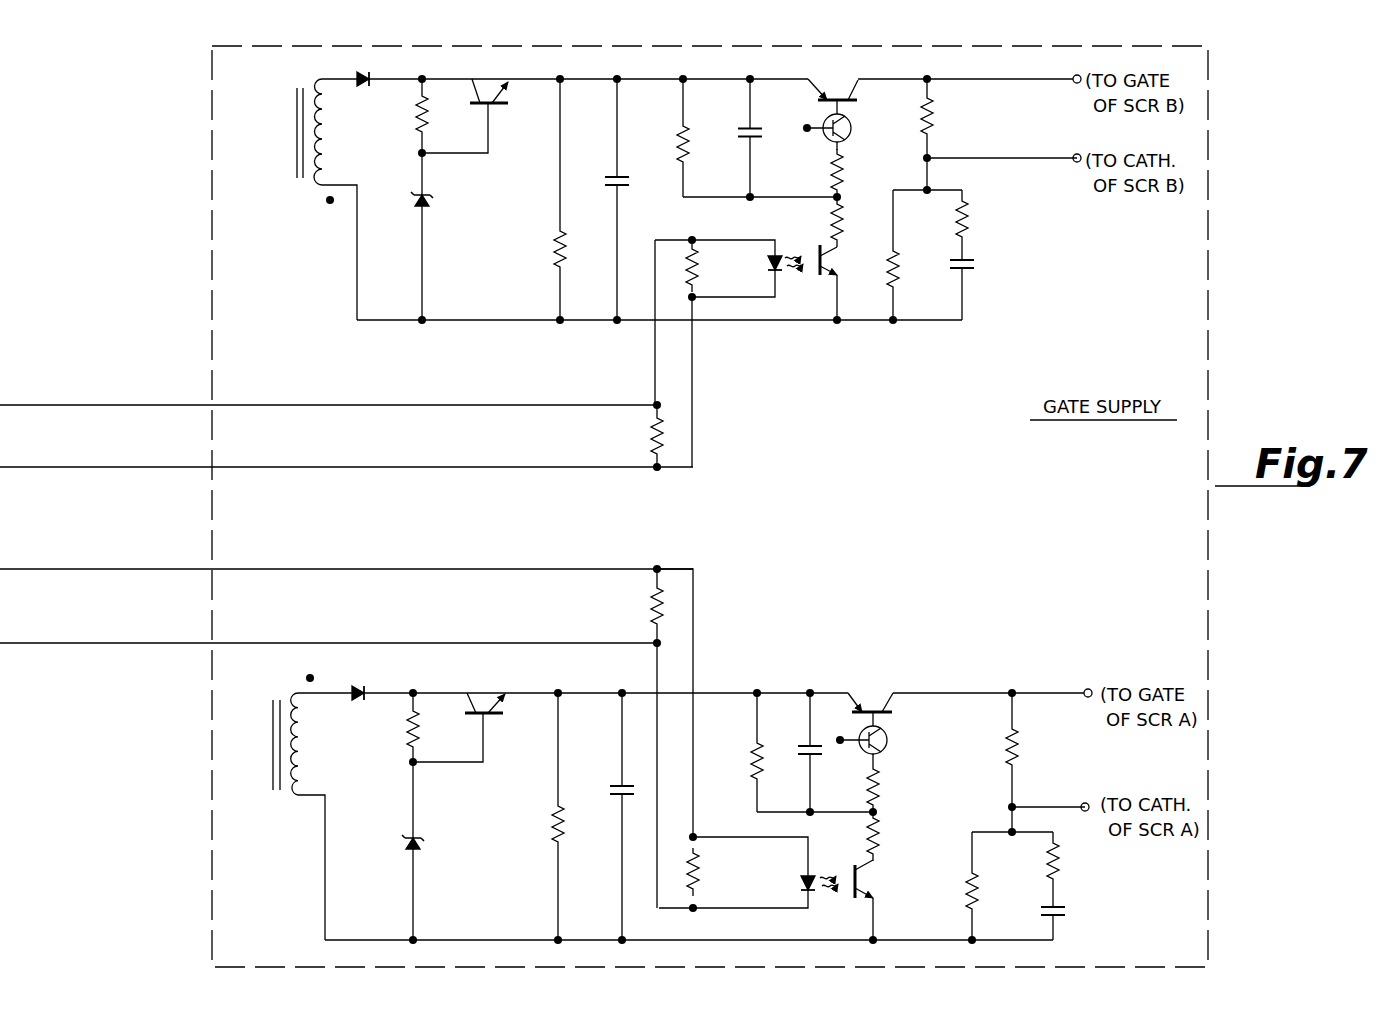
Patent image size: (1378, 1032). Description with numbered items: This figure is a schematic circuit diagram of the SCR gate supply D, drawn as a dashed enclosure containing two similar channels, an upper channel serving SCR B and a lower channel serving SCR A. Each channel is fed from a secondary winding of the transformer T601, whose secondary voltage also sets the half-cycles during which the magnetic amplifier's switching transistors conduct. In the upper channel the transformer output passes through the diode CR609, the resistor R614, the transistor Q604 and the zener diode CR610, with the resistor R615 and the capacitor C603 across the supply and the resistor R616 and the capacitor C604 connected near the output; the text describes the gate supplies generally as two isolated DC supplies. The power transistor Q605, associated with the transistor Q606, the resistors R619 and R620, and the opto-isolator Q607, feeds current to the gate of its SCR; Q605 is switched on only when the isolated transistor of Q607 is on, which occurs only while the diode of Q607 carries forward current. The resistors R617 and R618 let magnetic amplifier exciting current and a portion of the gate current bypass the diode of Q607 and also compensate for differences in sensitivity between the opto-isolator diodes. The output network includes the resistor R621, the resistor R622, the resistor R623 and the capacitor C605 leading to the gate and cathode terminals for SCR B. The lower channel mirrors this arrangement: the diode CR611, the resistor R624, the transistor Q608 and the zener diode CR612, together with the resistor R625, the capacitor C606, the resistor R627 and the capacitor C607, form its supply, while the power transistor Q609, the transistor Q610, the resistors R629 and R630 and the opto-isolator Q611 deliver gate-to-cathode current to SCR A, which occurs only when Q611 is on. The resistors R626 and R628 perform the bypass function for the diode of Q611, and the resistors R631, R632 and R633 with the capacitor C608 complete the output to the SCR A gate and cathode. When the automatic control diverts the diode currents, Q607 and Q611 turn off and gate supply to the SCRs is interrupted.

The gate supply D is at (1210, 312).
The transformer T601 is at (290, 155).
The diode CR609 is at (355, 78).
The resistor R614 is at (420, 110).
The transistor Q604 is at (492, 98).
The zener diode CR610 is at (428, 206).
The resistor R615 is at (552, 260).
The capacitor C603 is at (613, 176).
The resistor R616 is at (680, 135).
The capacitor C604 is at (745, 128).
The power transistor Q605 is at (848, 96).
The light activated transistor Q606 is at (849, 125).
The resistor R619 is at (843, 181).
The resistor R620 is at (832, 218).
The opto-isolator Q607 is at (830, 262).
The resistor R618 is at (700, 277).
The resistor R617 is at (650, 438).
The resistor R621 is at (935, 118).
The resistor R622 is at (897, 270).
The resistor R623 is at (970, 218).
The capacitor C605 is at (968, 270).
The resistor R626 is at (650, 605).
The diode CR611 is at (357, 689).
The resistor R624 is at (404, 725).
The transistor Q608 is at (484, 698).
The zener diode CR612 is at (420, 847).
The resistor R625 is at (550, 808).
The capacitor C606 is at (617, 786).
The resistor R627 is at (750, 765).
The capacitor C607 is at (802, 746).
The power transistor Q609 is at (870, 696).
The light activated transistor Q610 is at (889, 738).
The resistor R629 is at (882, 793).
The resistor R630 is at (880, 850).
The opto-isolator Q611 is at (868, 880).
The resistor R628 is at (703, 878).
The resistor R631 is at (1020, 750).
The resistor R632 is at (978, 900).
The resistor R633 is at (1060, 868).
The capacitor C608 is at (1068, 910).